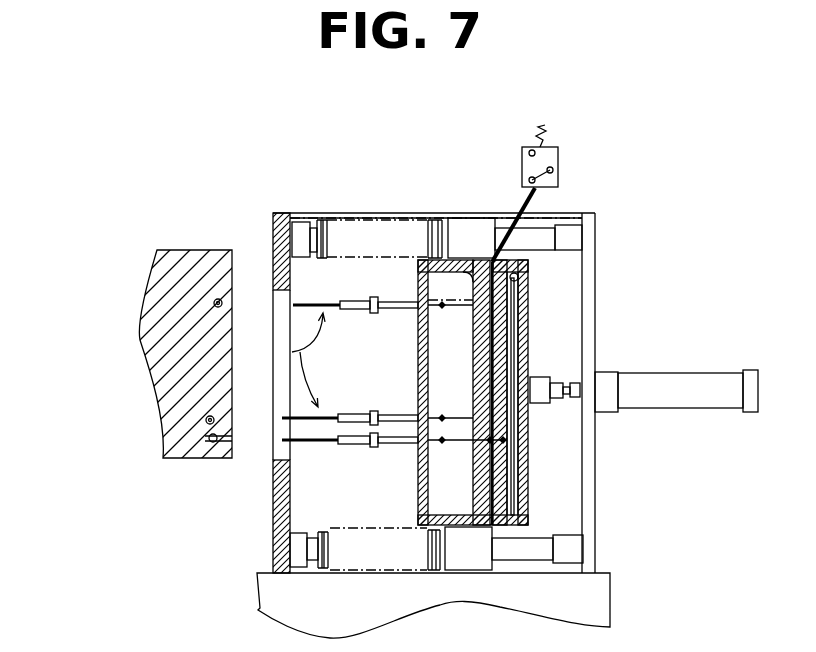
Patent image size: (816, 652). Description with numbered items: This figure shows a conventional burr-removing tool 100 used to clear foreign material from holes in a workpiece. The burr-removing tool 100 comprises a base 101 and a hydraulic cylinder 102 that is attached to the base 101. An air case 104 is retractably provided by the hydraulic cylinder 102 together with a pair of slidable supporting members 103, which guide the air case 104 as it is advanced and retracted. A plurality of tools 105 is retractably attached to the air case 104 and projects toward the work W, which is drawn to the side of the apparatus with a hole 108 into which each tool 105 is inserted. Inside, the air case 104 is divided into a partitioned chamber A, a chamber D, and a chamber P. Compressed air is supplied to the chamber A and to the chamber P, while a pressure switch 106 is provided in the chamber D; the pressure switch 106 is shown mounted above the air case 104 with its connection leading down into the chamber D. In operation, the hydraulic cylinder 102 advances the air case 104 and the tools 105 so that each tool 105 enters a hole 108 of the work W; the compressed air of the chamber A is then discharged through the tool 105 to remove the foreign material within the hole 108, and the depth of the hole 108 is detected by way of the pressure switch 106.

The burr-removing tool 100 is at (605, 206).
The base 101 is at (590, 518).
The hydraulic cylinder 102 is at (672, 398).
The slidable supporting member 103 is at (468, 209).
The air case 104 is at (542, 295).
The tool 105 is at (283, 345).
The pressure switch 106 is at (570, 160).
The hole 108 is at (220, 303).
The work W is at (180, 270).
The chamber A is at (415, 268).
The chamber D is at (458, 265).
The chamber P is at (515, 278).